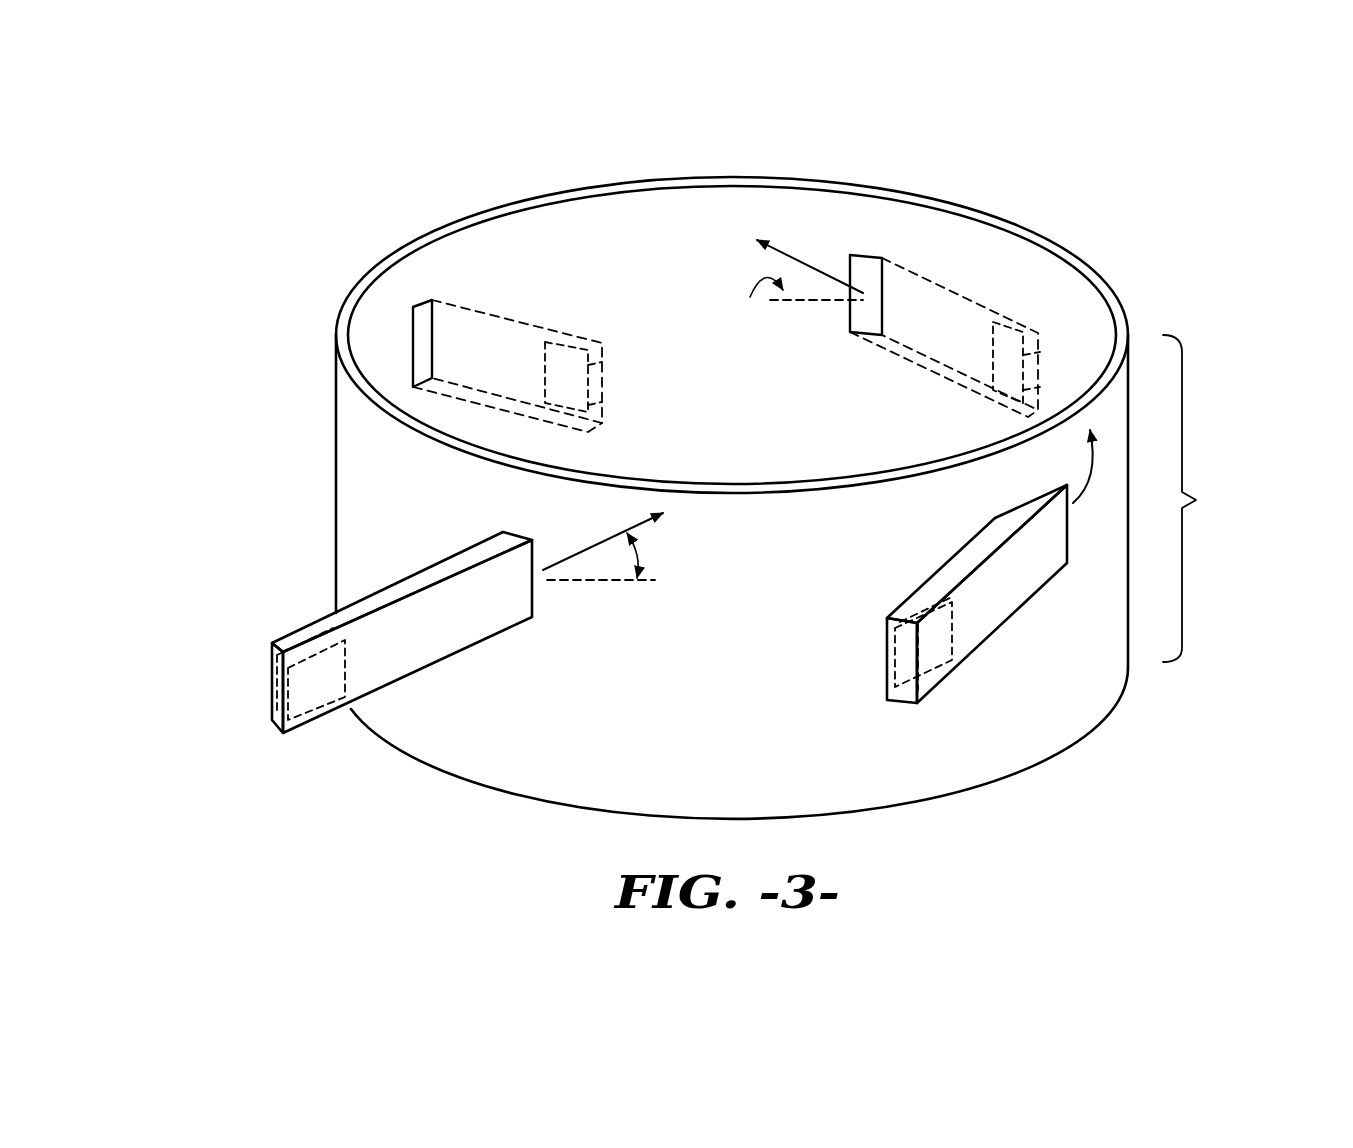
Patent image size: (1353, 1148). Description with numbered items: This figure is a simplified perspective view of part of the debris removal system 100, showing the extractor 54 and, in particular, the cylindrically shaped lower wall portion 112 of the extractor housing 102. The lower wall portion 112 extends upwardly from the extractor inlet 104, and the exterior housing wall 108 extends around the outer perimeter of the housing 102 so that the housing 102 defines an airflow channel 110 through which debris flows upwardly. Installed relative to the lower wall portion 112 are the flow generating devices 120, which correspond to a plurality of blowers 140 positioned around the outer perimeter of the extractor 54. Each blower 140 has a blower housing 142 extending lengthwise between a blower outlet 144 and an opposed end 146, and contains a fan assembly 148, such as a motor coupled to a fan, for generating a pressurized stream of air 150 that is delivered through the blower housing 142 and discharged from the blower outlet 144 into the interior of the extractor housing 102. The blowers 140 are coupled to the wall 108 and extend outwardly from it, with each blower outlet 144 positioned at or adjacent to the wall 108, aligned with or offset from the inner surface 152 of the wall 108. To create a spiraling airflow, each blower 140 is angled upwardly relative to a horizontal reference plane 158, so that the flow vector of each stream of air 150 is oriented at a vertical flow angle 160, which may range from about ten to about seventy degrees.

The system 100 is at (796, 478).
The primary extractor 54 is at (796, 492).
The extractor housing 102 is at (796, 492).
The extractor inlet 104 is at (879, 807).
The exterior housing wall 108 is at (615, 182).
The airflow channel 110 is at (695, 263).
The lower wall portion 112 is at (1210, 498).
The flow generating device 120 is at (640, 474).
The blower 140 is at (660, 492).
The blower housing 142 is at (563, 430).
The blower outlet 144 is at (410, 300).
The opposed end 146 is at (602, 405).
The fan assembly 148 is at (602, 365).
The stream of air 150 is at (363, 339).
The inner surface 152 is at (530, 228).
The horizontal reference plane 158 is at (813, 303).
The vertical flow angle 160 is at (705, 428).